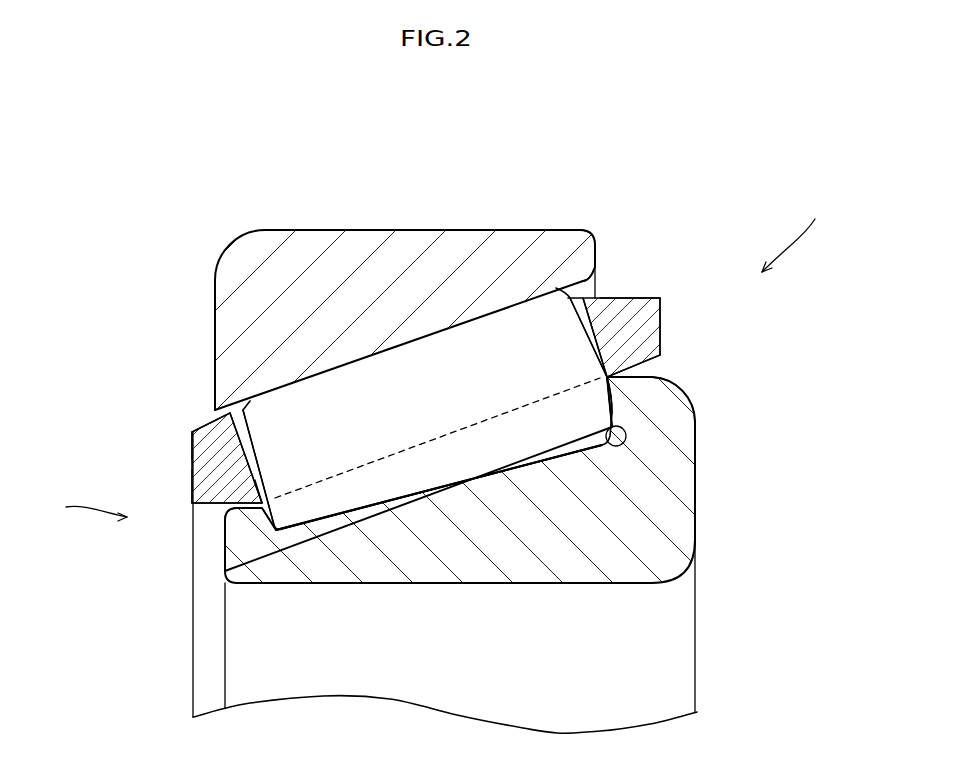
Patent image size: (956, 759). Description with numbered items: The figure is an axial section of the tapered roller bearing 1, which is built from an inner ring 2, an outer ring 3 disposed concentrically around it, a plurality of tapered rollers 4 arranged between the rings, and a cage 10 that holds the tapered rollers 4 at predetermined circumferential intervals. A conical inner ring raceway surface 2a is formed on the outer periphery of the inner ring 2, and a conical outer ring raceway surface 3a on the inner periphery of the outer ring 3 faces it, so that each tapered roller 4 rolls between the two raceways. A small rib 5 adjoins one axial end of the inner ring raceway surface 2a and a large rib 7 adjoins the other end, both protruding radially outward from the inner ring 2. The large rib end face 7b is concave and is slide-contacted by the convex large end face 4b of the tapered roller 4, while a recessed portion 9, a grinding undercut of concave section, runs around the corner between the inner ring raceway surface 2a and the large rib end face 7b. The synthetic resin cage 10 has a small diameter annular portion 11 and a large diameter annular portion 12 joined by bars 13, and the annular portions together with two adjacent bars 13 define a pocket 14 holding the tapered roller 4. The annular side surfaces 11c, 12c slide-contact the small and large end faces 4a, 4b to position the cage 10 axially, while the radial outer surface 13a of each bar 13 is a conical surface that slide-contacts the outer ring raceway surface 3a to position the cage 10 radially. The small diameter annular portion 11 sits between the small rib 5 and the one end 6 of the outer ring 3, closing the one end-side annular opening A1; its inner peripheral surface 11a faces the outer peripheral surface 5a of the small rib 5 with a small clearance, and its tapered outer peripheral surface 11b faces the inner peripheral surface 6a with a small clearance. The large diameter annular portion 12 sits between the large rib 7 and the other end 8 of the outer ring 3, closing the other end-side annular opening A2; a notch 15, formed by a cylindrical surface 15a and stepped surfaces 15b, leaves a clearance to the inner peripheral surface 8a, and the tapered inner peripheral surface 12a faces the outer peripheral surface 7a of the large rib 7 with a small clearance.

The tapered roller bearing 1 is at (668, 182).
The inner ring 2 is at (496, 585).
The inner ring raceway surface 2a is at (372, 506).
The outer ring 3 is at (318, 230).
The outer ring raceway surface 3a is at (449, 352).
The tapered roller 4 is at (272, 394).
The small end face 4a is at (270, 530).
The large end face 4b is at (617, 417).
The small rib 5 is at (237, 537).
The outer peripheral surface of the small rib 5a is at (265, 472).
The one end of the outer ring 6 is at (232, 390).
The inner peripheral surface of the one end of the outer ring 6a is at (190, 442).
The large rib 7 is at (682, 413).
The outer peripheral surface of the large rib 7a is at (665, 378).
The large rib end face 7b is at (608, 413).
The other end of the outer ring 8 is at (596, 242).
The inner peripheral surface of the other end of the outer ring 8a is at (597, 281).
The recessed portion 9 is at (603, 446).
The cage 10 is at (662, 313).
The small diameter annular portion 11 is at (190, 460).
The inner peripheral surface of the small diameter annular portion 11a is at (213, 507).
The outer peripheral surface of the small diameter annular portion 11b is at (202, 423).
The annular side surface of the small diameter annular portion 11c is at (232, 413).
The large diameter annular portion 12 is at (663, 298).
The inner peripheral surface of the large diameter annular portion 12a is at (658, 360).
The annular side surface of the large diameter annular portion 12c is at (572, 298).
The bar 13 is at (502, 350).
The radial outer surface of the bar 13a is at (393, 348).
The pocket 14 is at (192, 478).
The notch 15 is at (623, 298).
The cylindrical surface 15a is at (650, 298).
The stepped surface 15b is at (562, 292).
The one end-side annular opening A1 is at (82, 506).
The other end-side annular opening A2 is at (804, 236).